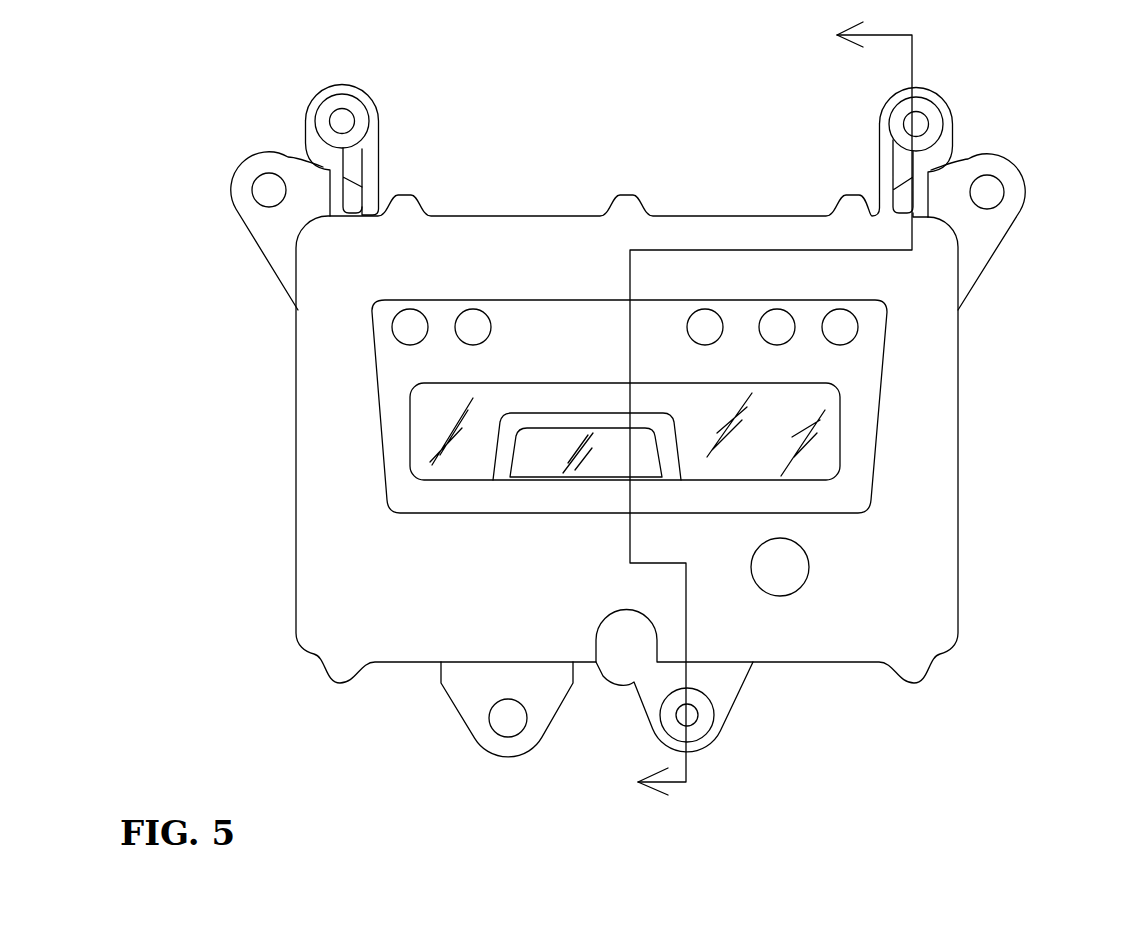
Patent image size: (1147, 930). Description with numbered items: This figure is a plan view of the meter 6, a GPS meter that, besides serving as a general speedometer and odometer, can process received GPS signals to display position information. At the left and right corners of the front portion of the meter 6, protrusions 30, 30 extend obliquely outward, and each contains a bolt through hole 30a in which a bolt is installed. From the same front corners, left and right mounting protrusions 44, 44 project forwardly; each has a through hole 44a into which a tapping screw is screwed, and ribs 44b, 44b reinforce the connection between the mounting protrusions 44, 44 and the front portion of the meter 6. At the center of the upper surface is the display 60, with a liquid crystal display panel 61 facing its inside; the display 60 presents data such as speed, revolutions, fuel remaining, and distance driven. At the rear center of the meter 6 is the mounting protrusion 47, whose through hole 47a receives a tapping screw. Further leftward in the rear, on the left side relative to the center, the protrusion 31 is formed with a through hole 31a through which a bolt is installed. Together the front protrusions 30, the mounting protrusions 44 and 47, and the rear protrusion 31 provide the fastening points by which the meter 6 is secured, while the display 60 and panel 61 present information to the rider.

The meter 6 is at (555, 100).
The protrusion 30 is at (273, 247).
The bolt through hole 30a is at (262, 188).
The protrusion 31 is at (460, 697).
The through hole 31a is at (502, 728).
The mounting protrusion 44 is at (317, 98).
The through hole 44a is at (341, 118).
The rib 44b is at (377, 183).
The mounting protrusion 47 is at (720, 675).
The through hole 47a is at (698, 715).
The display 60 is at (827, 453).
The liquid crystal display panel 61 is at (797, 413).